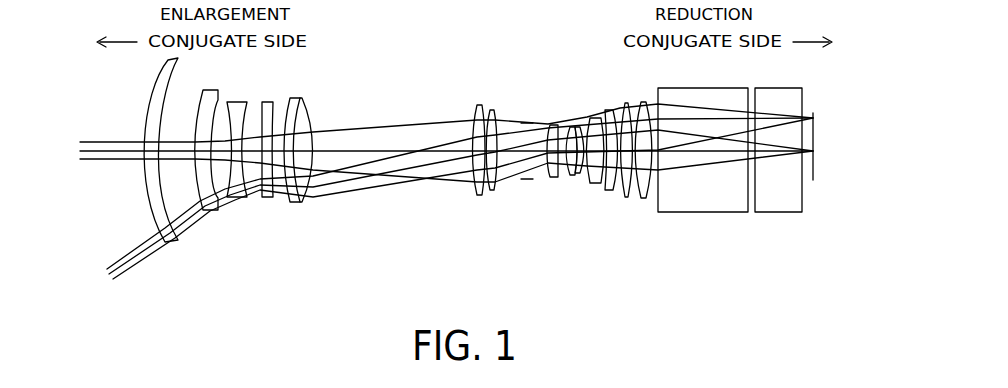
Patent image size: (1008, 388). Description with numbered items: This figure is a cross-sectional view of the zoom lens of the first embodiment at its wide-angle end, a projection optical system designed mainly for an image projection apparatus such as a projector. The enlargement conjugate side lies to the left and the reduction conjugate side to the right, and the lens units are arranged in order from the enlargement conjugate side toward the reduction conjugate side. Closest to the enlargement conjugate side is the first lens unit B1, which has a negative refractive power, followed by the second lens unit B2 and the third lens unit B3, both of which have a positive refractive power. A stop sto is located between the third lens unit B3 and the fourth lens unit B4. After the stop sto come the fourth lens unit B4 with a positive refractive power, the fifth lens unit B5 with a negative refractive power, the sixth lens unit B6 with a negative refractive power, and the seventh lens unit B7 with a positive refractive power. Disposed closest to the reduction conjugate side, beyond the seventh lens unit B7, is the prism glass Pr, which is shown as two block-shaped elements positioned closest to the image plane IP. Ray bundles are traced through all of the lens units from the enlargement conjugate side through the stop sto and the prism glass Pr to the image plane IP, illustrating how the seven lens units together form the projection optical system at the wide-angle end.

The first lens unit B1 is at (323, 250).
The second lens unit B2 is at (485, 200).
The third lens unit B3 is at (505, 200).
The fourth lens unit B4 is at (563, 202).
The fifth lens unit B5 is at (583, 202).
The sixth lens unit B6 is at (630, 202).
The seventh lens unit B7 is at (652, 202).
The stop sto is at (536, 127).
The prism glass Pr is at (807, 218).
The image plane IP is at (822, 131).